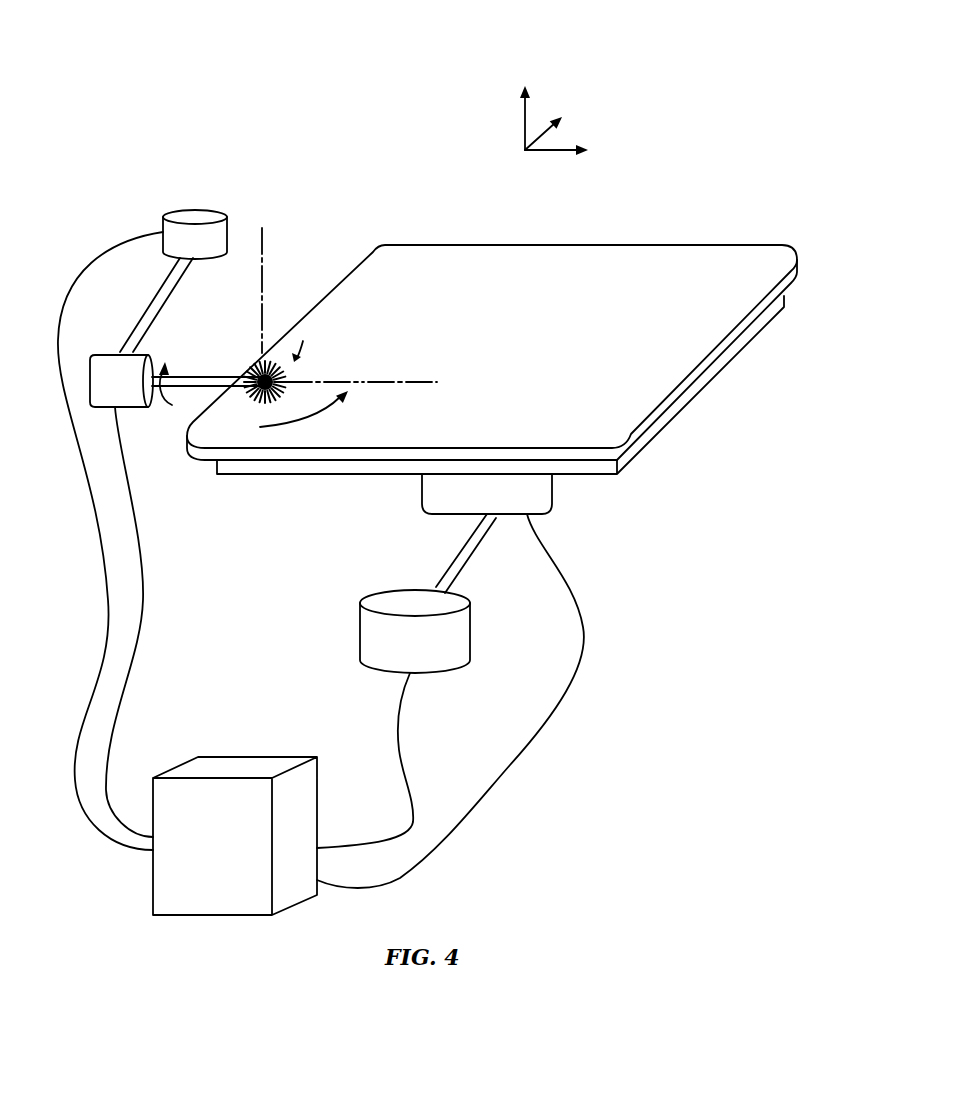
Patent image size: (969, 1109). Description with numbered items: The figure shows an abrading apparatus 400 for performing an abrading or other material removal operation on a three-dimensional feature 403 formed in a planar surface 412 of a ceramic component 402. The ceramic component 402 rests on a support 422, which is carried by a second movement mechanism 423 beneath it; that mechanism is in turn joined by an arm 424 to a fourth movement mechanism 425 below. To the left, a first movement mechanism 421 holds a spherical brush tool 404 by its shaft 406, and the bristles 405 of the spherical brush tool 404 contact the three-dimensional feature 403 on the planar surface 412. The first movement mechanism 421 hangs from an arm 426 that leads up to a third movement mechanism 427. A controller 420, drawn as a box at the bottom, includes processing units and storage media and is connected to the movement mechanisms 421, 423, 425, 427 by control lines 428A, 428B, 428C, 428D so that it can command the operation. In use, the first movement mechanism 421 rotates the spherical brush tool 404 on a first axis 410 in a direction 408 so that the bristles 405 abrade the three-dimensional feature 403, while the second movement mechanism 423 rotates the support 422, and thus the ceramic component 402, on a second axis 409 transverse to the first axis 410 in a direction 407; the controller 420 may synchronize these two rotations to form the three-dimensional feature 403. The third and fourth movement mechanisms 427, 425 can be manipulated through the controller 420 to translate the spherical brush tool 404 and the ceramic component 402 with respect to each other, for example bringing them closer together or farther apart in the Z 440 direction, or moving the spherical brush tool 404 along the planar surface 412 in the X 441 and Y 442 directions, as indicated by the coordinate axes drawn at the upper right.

The apparatus 400 is at (177, 48).
The ceramic component 402 is at (680, 399).
The three-dimensional feature 403 is at (261, 364).
The spherical brush tool 404 is at (313, 347).
The bristles 405 is at (287, 377).
The shaft 406 is at (195, 376).
The direction 407 is at (322, 416).
The direction 408 is at (172, 406).
The second axis 409 is at (261, 279).
The first axis 410 is at (384, 380).
The planar surface 412 is at (710, 244).
The controller 420 is at (250, 756).
The first movement mechanism 421 is at (99, 354).
The support 422 is at (644, 450).
The second movement mechanism 423 is at (560, 492).
The arm 424 is at (474, 563).
The third movement mechanism 425 is at (472, 636).
The arm 426 is at (159, 290).
The fourth movement mechanism 427 is at (196, 214).
The control line 428A is at (399, 742).
The control line 428B is at (524, 743).
The control line 428C is at (143, 598).
The control line 428D is at (107, 598).
The Z direction 440 is at (534, 70).
The X direction 441 is at (582, 116).
The Y direction 442 is at (612, 152).